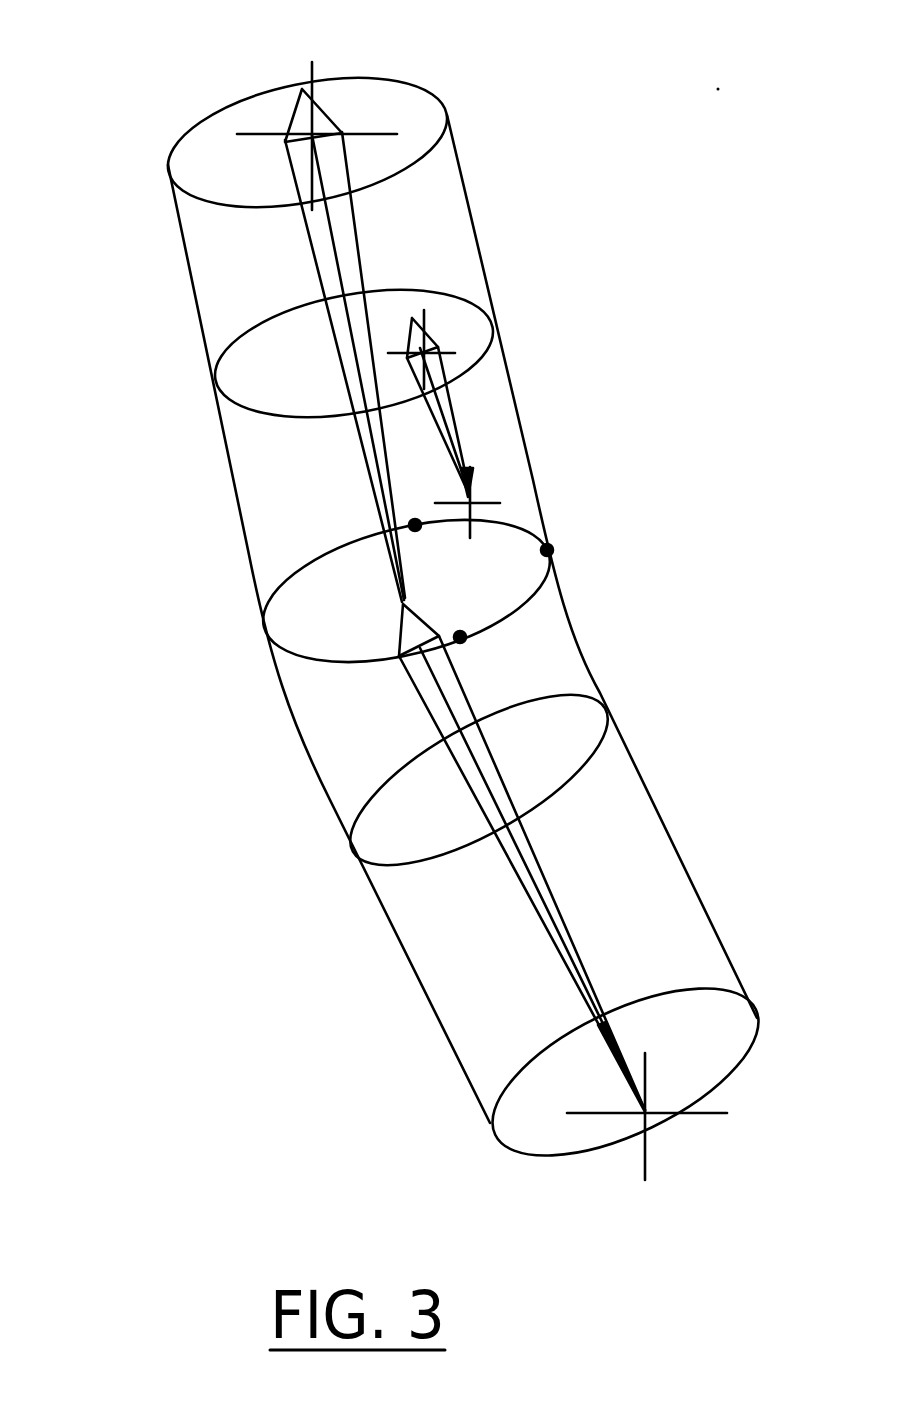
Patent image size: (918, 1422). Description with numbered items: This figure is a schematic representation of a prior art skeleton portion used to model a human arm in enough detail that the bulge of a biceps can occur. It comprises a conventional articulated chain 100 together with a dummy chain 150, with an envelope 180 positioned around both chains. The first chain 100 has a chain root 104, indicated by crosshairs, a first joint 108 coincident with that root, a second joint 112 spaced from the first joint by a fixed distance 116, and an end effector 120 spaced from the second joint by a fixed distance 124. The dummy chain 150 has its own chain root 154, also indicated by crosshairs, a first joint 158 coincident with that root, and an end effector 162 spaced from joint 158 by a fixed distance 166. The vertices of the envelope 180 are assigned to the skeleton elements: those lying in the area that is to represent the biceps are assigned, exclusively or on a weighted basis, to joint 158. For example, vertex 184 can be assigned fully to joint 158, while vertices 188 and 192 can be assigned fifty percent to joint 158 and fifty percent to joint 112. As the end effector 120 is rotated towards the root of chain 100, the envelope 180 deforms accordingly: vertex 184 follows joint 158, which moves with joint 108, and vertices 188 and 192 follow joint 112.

The articulated chain 100 is at (284, 252).
The chain root 104 is at (312, 63).
The first joint 108 is at (328, 130).
The second joint 112 is at (402, 645).
The fixed distance 116 is at (217, 357).
The end effector 120 is at (697, 1115).
The fixed distance 124 is at (482, 795).
The dummy chain 150 is at (457, 393).
The chain root 154 is at (438, 338).
The first joint 158 is at (427, 350).
The end effector 162 is at (483, 503).
The fixed distance 166 is at (456, 424).
The envelope 180 is at (474, 159).
The vertex 184 is at (552, 551).
The vertex 188 is at (464, 640).
The vertex 192 is at (410, 518).